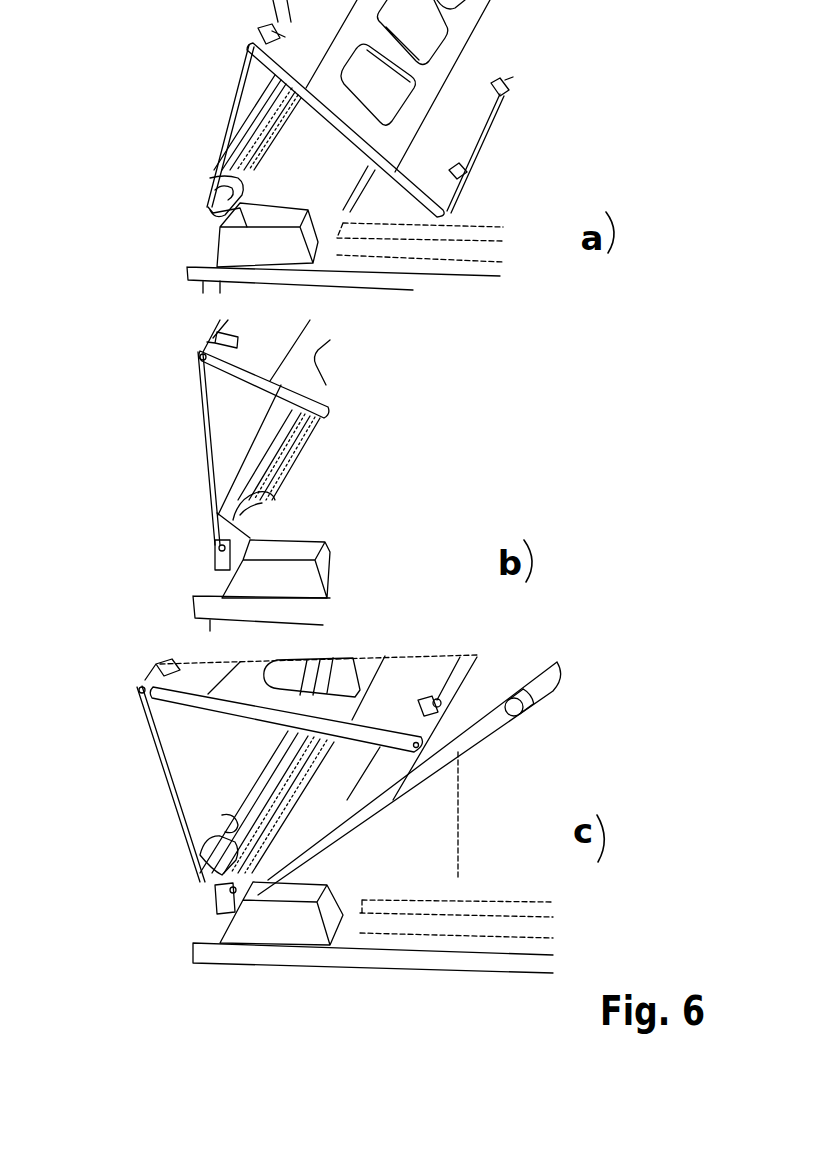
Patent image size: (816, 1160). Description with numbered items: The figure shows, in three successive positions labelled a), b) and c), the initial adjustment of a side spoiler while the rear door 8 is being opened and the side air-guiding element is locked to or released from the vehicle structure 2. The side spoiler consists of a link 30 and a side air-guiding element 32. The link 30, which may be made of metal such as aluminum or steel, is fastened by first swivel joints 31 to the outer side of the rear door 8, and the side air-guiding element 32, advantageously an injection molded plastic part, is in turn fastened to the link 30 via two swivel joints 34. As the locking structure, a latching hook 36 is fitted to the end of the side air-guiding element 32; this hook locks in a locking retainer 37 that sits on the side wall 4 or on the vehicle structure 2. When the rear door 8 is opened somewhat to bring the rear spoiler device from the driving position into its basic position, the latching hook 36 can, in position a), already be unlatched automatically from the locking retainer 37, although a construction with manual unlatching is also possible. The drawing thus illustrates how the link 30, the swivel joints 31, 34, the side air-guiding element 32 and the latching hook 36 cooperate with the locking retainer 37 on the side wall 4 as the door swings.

The vehicle structure 2 is at (187, 260).
The side wall 4 is at (207, 222).
The rear door 8 is at (393, 197).
The link 30 is at (457, 34).
The first swivel joint 31 is at (507, 90).
The side air-guiding element 32 is at (243, 103).
The swivel joint 34 is at (268, 21).
The latching hook 36 is at (210, 178).
The locking retainer 37 is at (217, 218).